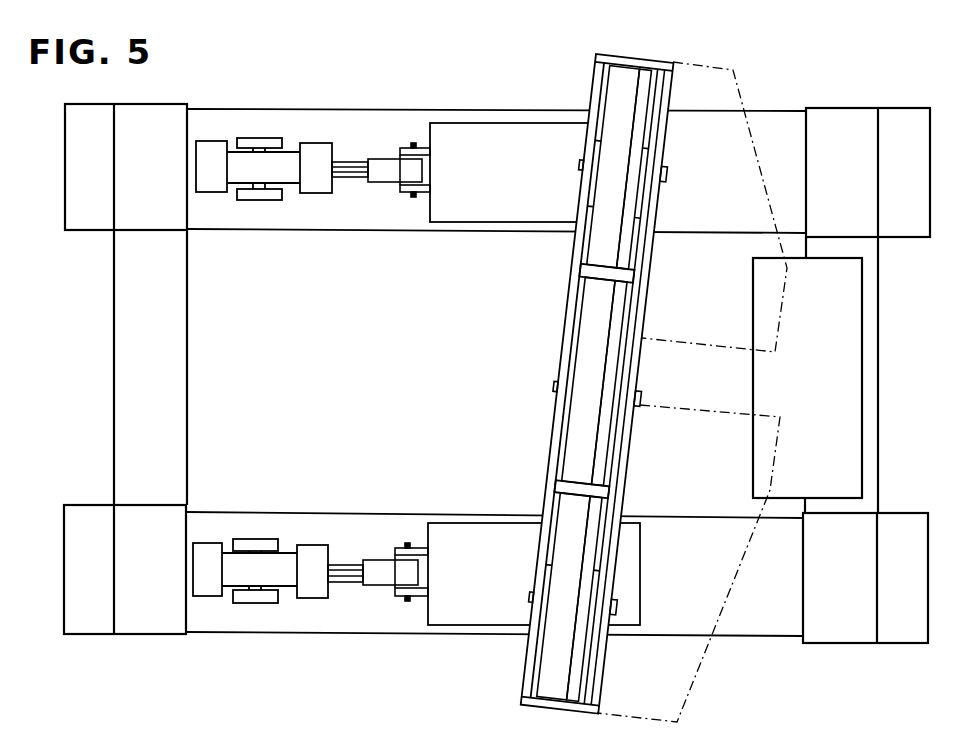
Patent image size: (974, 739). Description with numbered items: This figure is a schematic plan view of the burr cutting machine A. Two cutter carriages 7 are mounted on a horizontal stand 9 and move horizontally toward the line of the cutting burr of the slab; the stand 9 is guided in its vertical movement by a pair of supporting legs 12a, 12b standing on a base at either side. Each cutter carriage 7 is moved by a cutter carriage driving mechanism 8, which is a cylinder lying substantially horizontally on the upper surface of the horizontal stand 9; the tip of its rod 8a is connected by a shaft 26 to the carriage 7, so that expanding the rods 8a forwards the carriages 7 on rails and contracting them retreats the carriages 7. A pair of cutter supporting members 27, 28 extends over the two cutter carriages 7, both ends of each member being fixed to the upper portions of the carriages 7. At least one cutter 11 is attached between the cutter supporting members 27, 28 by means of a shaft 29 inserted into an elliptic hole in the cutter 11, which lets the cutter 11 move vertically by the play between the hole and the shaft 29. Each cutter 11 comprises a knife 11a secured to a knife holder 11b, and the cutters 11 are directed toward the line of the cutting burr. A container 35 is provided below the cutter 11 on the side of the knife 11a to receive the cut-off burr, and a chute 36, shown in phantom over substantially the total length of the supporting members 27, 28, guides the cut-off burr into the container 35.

The cutter carriage 7 is at (530, 123).
The cutter carriage driving mechanism 8 is at (273, 176).
The rod 8a is at (352, 166).
The horizontal stand 9 is at (268, 107).
The cutter 11 is at (590, 388).
The knife 11a is at (628, 250).
The knife holder 11b is at (600, 247).
The supporting leg 12a is at (845, 118).
The supporting leg 12b is at (168, 118).
The shaft 26 is at (413, 147).
The cutter supporting member 27 is at (620, 472).
The cutter supporting member 28 is at (551, 446).
The shaft 29 is at (668, 176).
The container 35 is at (862, 366).
The chute 36 is at (742, 93).
The burr cutting machine A is at (484, 85).